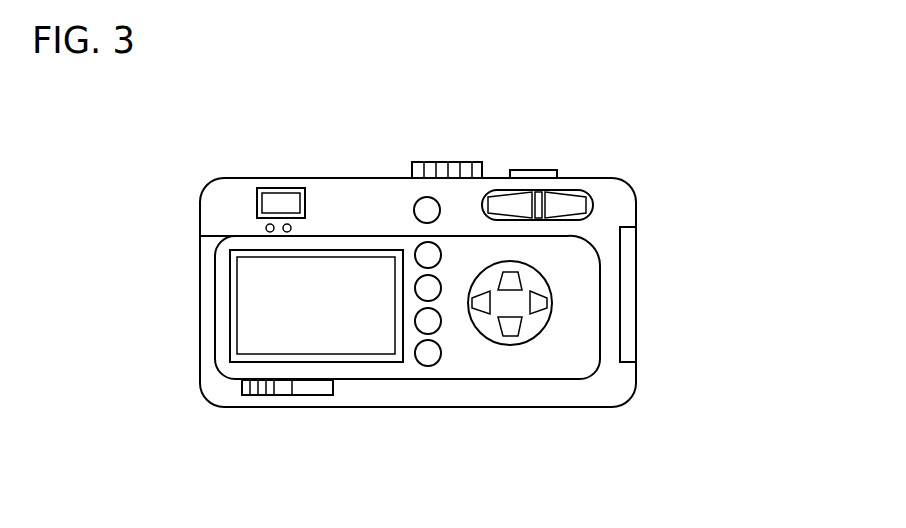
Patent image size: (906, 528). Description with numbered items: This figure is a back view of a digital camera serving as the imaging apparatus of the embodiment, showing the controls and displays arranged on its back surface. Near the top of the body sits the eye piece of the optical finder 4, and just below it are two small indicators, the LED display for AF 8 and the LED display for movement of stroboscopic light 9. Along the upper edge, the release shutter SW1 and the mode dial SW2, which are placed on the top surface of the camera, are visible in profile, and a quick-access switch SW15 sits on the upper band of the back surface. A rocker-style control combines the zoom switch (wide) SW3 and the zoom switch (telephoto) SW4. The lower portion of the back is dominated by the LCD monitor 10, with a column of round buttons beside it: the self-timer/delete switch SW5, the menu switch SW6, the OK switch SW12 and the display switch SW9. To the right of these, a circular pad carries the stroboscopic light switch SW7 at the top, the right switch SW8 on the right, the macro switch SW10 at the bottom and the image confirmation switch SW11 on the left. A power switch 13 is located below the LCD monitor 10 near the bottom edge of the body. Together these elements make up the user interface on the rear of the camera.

The optical finder 4 is at (272, 200).
The LED display for AF 8 is at (266, 229).
The LED display for movement of stroboscopic light 9 is at (285, 232).
The LCD monitor 10 is at (290, 343).
The power switch 13 is at (253, 382).
The release shutter SW1 is at (528, 171).
The mode dial SW2 is at (443, 162).
The zoom switch (wide) SW3 is at (524, 198).
The zoom switch (telephoto) SW4 is at (585, 206).
The self-timer/delete switch SW5 is at (430, 255).
The menu switch SW6 is at (425, 288).
The stroboscopic light switch SW7 is at (518, 278).
The right switch SW8 is at (540, 305).
The display switch SW9 is at (428, 354).
The macro switch SW10 is at (513, 330).
The image confirmation switch SW11 is at (485, 307).
The OK switch SW12 is at (430, 322).
The quick-access switch SW15 is at (425, 208).